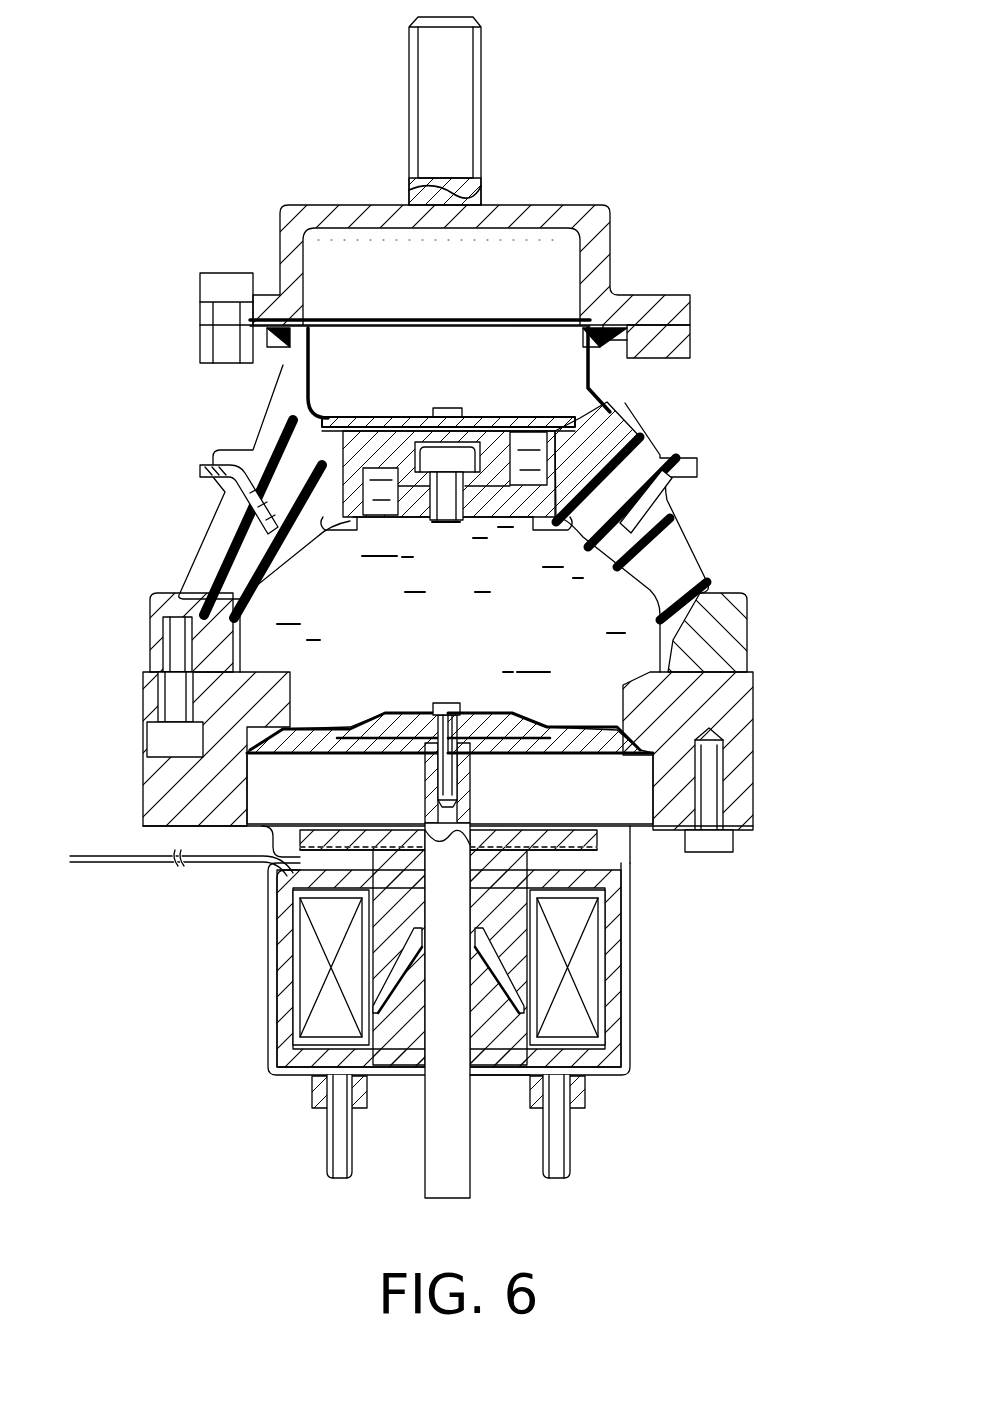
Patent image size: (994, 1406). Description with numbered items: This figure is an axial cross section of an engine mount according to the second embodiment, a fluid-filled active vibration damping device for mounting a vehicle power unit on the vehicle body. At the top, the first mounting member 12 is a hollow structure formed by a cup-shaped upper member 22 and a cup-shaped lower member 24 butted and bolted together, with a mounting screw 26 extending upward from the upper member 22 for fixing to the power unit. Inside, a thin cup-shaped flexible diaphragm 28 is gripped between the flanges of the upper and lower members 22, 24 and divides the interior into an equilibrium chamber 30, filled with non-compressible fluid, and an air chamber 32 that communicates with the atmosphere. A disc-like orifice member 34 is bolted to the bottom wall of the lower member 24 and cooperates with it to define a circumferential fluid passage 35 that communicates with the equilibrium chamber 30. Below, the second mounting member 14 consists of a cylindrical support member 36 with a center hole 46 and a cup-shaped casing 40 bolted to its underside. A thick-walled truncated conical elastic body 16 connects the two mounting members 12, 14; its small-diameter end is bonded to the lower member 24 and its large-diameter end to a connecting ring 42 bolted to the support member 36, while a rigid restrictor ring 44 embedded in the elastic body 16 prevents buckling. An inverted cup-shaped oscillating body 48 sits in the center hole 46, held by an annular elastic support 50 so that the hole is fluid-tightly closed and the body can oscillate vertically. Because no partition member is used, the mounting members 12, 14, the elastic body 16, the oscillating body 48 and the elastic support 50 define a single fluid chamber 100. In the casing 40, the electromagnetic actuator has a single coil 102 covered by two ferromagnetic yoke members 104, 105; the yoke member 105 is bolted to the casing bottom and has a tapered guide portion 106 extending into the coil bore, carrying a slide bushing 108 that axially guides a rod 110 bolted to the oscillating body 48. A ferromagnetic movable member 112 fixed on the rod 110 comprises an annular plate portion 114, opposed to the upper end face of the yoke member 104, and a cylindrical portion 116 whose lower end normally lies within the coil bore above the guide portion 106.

The first mounting member 12 is at (630, 219).
The second mounting member 14 is at (765, 783).
The elastic body 16 is at (665, 540).
The upper member 22 is at (318, 222).
The lower member 24 is at (295, 368).
The mounting screw 26 is at (462, 88).
The flexible diaphragm 28 is at (372, 418).
The equilibrium chamber 30 is at (468, 432).
The air chamber 32 is at (563, 267).
The orifice member 34 is at (352, 450).
The fluid passage 35 is at (535, 477).
The support member 36 is at (740, 690).
The casing 40 is at (270, 952).
The connecting ring 42 is at (740, 620).
The restrictor ring 44 is at (197, 473).
The center hole 46 is at (287, 678).
The oscillating body 48 is at (377, 733).
The elastic support 50 is at (588, 733).
The fluid chamber 100 is at (297, 590).
The coil 102 is at (590, 992).
The yoke member 104 is at (282, 965).
The yoke member 105 is at (485, 1074).
The guide portion 106 is at (487, 983).
The slide bushing 108 is at (420, 1017).
The rod 110 is at (463, 1180).
The electromagnetically movable member 112 is at (542, 823).
The annular plate portion 114 is at (590, 842).
The cylindrical portion 116 is at (385, 942).